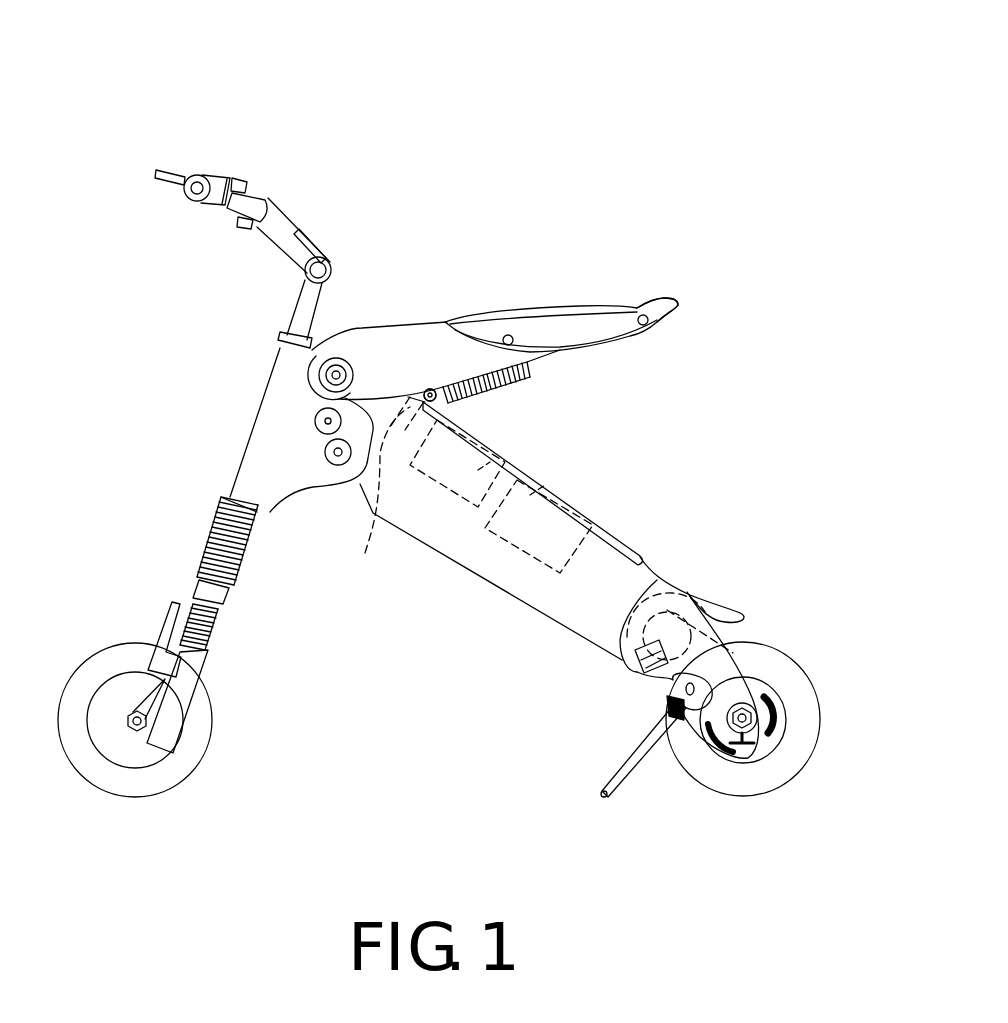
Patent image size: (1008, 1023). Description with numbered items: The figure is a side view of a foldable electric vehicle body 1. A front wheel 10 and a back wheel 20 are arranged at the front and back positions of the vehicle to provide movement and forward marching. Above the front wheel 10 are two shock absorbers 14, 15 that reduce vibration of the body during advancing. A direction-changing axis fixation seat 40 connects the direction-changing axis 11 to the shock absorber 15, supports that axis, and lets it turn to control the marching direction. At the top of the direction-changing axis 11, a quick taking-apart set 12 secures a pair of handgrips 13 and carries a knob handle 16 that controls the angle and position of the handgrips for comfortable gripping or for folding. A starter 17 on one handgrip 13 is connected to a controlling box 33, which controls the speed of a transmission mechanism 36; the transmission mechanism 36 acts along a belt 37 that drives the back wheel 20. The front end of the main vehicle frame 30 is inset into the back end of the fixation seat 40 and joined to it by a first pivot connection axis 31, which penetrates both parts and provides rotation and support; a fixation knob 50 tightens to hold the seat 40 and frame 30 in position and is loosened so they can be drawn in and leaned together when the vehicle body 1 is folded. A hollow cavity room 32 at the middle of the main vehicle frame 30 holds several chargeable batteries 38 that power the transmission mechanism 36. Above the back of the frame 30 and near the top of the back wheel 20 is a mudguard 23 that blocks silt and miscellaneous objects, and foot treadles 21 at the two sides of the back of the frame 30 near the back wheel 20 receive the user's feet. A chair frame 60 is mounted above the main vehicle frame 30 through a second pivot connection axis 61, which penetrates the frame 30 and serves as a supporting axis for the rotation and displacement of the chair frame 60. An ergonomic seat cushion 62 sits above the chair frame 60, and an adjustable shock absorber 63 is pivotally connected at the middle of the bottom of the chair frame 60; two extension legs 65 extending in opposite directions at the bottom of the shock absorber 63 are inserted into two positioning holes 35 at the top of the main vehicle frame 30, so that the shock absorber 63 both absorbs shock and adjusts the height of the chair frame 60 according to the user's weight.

The vehicle body 1 is at (514, 168).
The front wheel 10 is at (203, 742).
The direction-changing axis 11 is at (300, 304).
The quick taking-apart set 12 is at (307, 270).
The handgrips 13 is at (232, 203).
The shock absorber 14 is at (198, 624).
The shock absorber 15 is at (223, 543).
The knob handle 16 is at (325, 240).
The starter 17 is at (243, 176).
The back wheel 20 is at (805, 722).
The foot treadles 21 is at (640, 668).
The mudguard 23 is at (688, 593).
The main vehicle frame 30 is at (427, 537).
The first pivot connection axis 31 is at (339, 456).
The hollow cavity room 32 is at (612, 522).
The controlling box 33 is at (378, 512).
The positioning holes 35 is at (430, 395).
The transmission mechanism 36 is at (698, 596).
The belt 37 is at (733, 635).
The chargeable batteries 38 is at (505, 452).
The direction-changing axis fixation seat 40 is at (267, 455).
The fixation knob 50 is at (326, 422).
The chair frame 60 is at (428, 347).
The second pivot connection axis 61 is at (336, 358).
The seat cushion 62 is at (645, 300).
The adjustable shock absorber 63 is at (492, 390).
The extension legs 65 is at (443, 407).